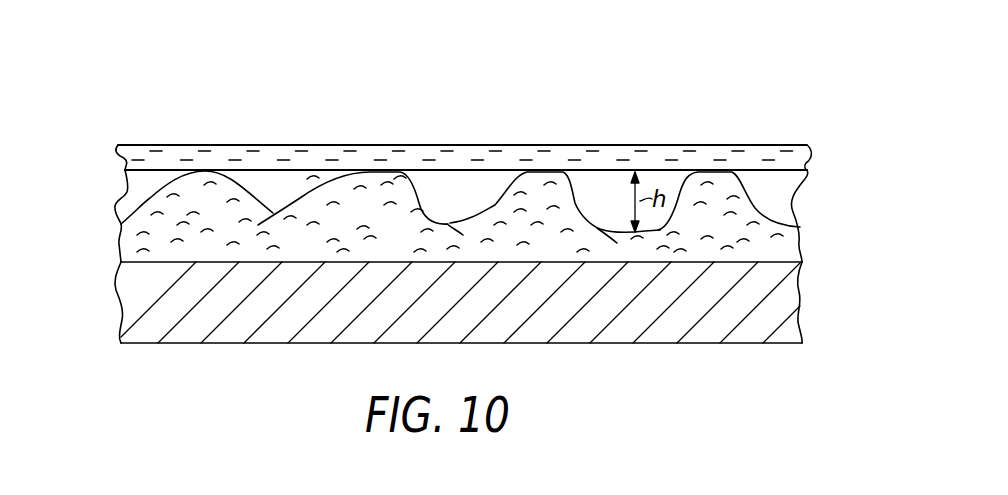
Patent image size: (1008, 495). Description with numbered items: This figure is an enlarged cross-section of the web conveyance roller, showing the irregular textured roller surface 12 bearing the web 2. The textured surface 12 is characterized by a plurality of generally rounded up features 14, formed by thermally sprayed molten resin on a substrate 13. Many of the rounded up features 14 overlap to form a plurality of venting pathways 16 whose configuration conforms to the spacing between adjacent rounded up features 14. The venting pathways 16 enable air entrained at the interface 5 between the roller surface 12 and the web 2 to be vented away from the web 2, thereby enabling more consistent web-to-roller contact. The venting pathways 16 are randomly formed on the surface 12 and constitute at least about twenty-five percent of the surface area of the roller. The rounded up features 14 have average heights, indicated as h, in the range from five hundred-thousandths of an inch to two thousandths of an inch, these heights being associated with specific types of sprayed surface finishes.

The web 2 is at (707, 146).
The interface 5 is at (177, 172).
The irregular textured roller surface 12 is at (790, 237).
The substrate 13 is at (790, 300).
The rounded up features 14 is at (147, 203).
The venting pathways 16 is at (292, 200).